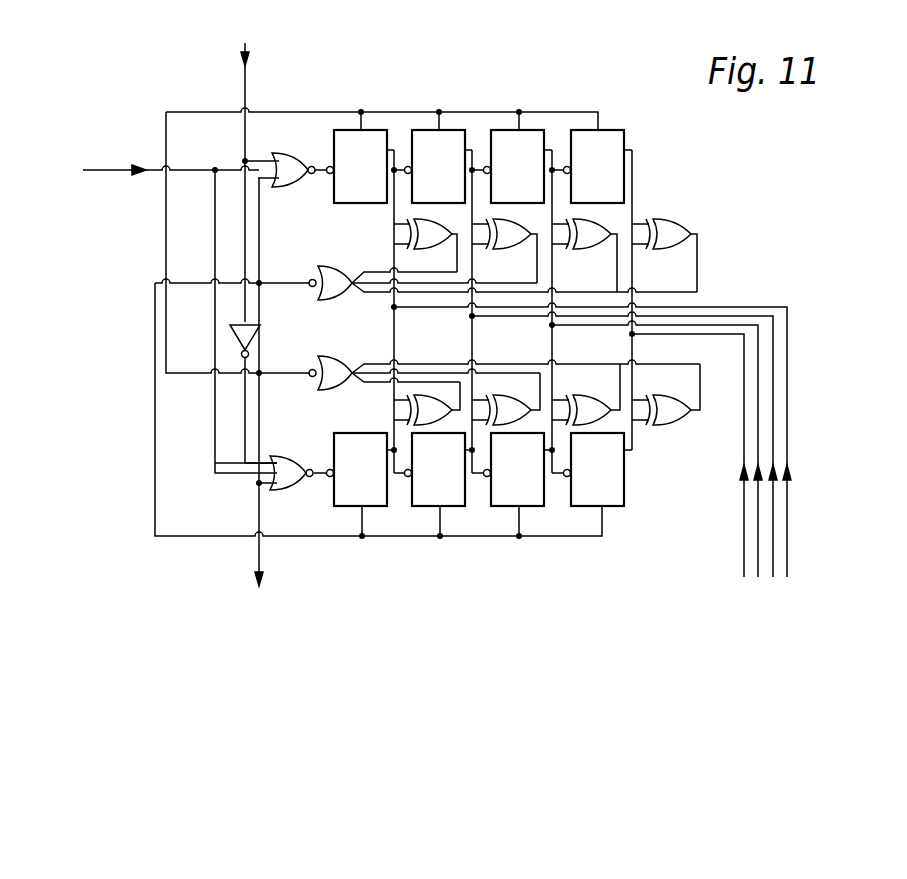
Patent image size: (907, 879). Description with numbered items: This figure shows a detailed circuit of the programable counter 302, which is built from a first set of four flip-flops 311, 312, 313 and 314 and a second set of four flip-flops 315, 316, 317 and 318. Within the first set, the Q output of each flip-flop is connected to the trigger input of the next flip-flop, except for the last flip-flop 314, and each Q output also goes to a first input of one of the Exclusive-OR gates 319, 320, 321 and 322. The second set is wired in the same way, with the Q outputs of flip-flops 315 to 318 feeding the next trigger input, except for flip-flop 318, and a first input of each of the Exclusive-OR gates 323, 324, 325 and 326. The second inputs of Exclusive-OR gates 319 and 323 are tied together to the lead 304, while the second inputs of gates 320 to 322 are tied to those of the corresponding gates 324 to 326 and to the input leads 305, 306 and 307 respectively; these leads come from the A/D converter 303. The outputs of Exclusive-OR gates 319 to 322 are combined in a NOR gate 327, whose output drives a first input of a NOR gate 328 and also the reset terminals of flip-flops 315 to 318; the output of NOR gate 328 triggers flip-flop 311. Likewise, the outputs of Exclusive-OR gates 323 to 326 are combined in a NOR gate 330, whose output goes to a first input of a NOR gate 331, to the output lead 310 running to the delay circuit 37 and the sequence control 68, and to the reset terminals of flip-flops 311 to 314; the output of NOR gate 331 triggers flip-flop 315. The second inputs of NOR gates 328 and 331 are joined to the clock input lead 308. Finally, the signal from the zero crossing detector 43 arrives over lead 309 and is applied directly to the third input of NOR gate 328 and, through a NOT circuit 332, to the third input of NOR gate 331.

The programable counter 302 is at (443, 70).
The A/D converter 303 is at (788, 602).
The lead 304 is at (744, 573).
The input lead 305 is at (758, 550).
The input lead 306 is at (773, 528).
The input lead 307 is at (787, 505).
The clock input lead 308 is at (120, 172).
The lead 309 is at (247, 49).
The output lead 310 is at (259, 562).
The flip-flop 311 is at (381, 130).
The flip-flop 312 is at (460, 130).
The flip-flop 313 is at (540, 130).
The flip-flop 314 is at (611, 129).
The flip-flop 315 is at (355, 507).
The flip-flop 316 is at (433, 507).
The flip-flop 317 is at (512, 507).
The flip-flop 318 is at (592, 507).
The Exclusive-OR gate 319 is at (406, 226).
The Exclusive-OR gate 320 is at (498, 250).
The Exclusive-OR gate 321 is at (576, 250).
The Exclusive-OR gate 322 is at (684, 222).
The Exclusive-OR gate 323 is at (432, 395).
The Exclusive-OR gate 324 is at (512, 395).
The Exclusive-OR gate 325 is at (595, 395).
The Exclusive-OR gate 326 is at (675, 425).
The NOR gate 327 is at (338, 267).
The NOR gate 328 is at (296, 145).
The NOR gate 330 is at (342, 357).
The NOR gate 331 is at (297, 458).
The NOT circuit 332 is at (256, 324).
The zero crossing detector 43 is at (241, 33).
The delay circuit 37 is at (268, 596).
The sequence control 68 is at (264, 618).